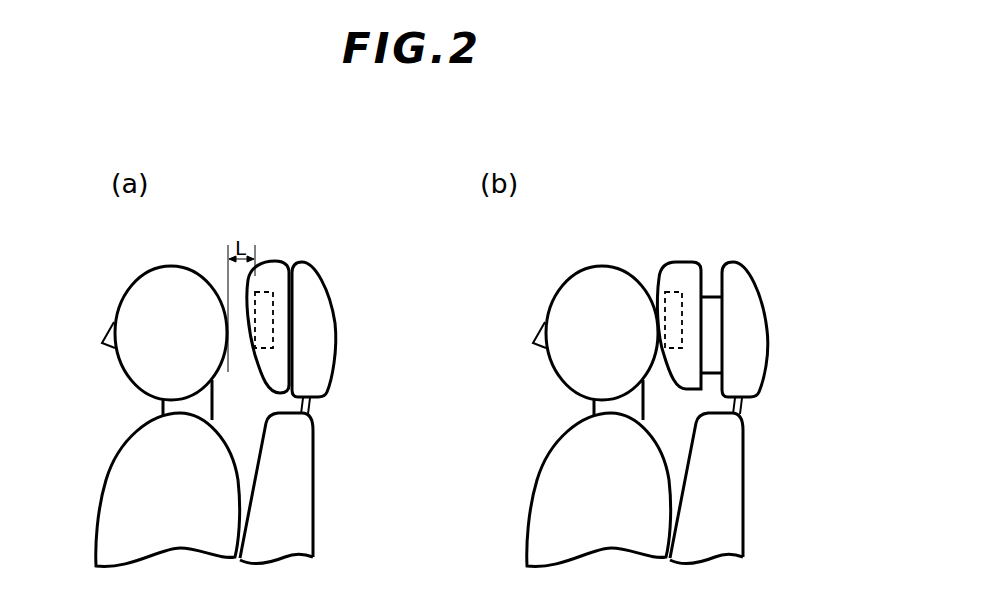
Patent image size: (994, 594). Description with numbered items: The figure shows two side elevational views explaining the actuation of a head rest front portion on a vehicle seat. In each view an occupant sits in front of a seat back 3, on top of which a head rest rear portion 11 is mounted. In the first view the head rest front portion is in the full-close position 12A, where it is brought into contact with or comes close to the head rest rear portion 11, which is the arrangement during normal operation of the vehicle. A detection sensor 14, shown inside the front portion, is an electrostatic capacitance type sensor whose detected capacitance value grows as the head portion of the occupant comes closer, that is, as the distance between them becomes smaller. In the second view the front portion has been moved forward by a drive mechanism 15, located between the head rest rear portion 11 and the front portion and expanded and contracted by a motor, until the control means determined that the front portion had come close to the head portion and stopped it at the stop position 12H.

The seat back 3 is at (316, 469).
The head rest rear portion 11 is at (320, 268).
The full-close position 12A is at (271, 262).
The stop position 12H is at (681, 262).
The detection sensor 14 is at (262, 348).
The drive mechanism 15 is at (708, 376).